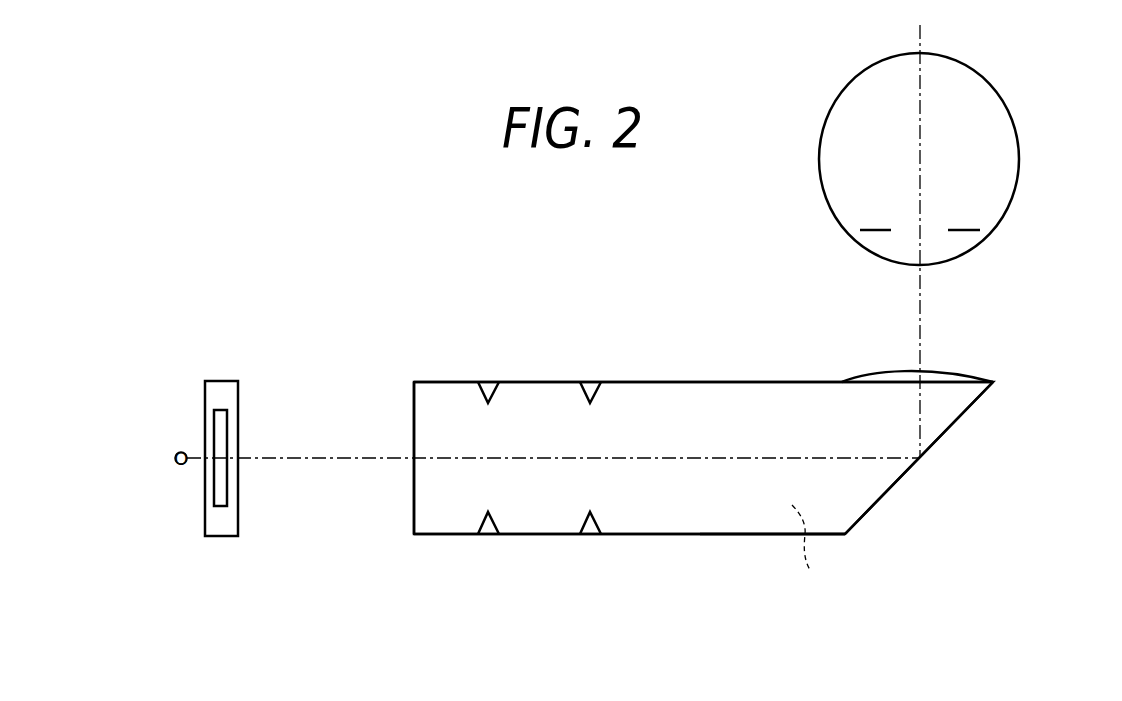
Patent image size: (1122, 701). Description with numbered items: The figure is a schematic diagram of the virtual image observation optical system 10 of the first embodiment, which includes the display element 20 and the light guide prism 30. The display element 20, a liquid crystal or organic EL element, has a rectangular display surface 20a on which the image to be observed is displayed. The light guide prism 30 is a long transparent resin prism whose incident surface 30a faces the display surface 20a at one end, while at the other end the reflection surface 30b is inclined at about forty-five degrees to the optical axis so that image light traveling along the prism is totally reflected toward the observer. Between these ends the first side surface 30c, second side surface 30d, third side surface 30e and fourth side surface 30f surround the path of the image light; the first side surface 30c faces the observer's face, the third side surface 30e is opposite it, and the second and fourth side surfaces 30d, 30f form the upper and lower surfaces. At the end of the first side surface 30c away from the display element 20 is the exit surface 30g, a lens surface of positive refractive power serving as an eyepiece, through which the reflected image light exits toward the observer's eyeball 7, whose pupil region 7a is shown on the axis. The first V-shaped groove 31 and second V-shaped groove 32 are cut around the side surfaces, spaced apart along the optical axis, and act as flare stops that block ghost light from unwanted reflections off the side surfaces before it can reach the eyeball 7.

The eyeball 7 is at (993, 166).
The pupil / iris 7a is at (937, 230).
The virtual image observation optical system 10 is at (517, 619).
The display element 20 is at (205, 388).
The display surface 20a is at (220, 430).
The light guide prism 30 is at (810, 440).
The incident surface 30a is at (413, 484).
The reflection surface 30b is at (864, 515).
The first side surface 30c is at (737, 380).
The second side surface 30d is at (750, 517).
The third side surface 30e is at (695, 535).
The fourth side surface 30f is at (816, 548).
The exit surface 30g is at (893, 370).
The first V-shaped groove 31 is at (486, 383).
The second V-shaped groove 32 is at (592, 383).